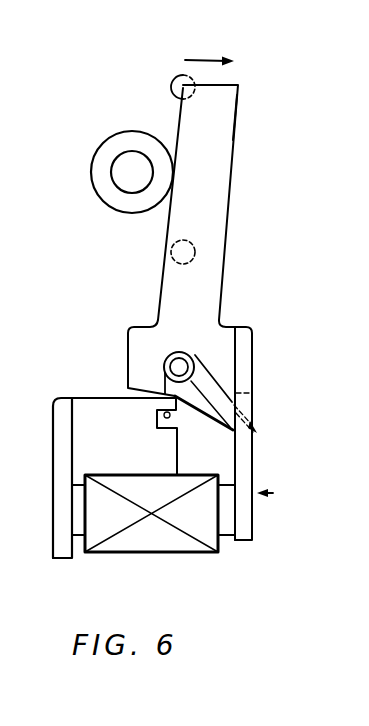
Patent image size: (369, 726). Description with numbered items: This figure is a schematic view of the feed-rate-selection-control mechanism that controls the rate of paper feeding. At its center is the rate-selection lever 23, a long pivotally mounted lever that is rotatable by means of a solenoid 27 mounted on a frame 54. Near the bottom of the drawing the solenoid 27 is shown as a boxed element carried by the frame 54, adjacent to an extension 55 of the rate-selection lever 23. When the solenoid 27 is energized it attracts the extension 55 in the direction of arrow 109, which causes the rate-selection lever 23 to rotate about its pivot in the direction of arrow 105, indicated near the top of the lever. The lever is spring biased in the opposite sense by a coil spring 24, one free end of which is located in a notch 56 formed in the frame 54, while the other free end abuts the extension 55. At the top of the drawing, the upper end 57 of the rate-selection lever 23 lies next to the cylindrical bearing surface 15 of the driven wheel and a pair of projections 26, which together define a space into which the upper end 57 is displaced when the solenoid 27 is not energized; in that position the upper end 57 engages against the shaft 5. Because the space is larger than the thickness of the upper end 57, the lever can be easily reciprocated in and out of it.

The shaft 5 is at (131, 178).
The cylindrical bearing surface 15 is at (115, 149).
The rate-selection lever 23 is at (223, 187).
The coil spring 24 is at (212, 380).
The projections 26 is at (172, 82).
The solenoid 27 is at (147, 546).
The frame 54 is at (58, 400).
The extension 55 is at (246, 458).
The notch 56 is at (157, 412).
The upper end 57 is at (228, 113).
The arrow 105 is at (205, 58).
The arrow 109 is at (273, 495).